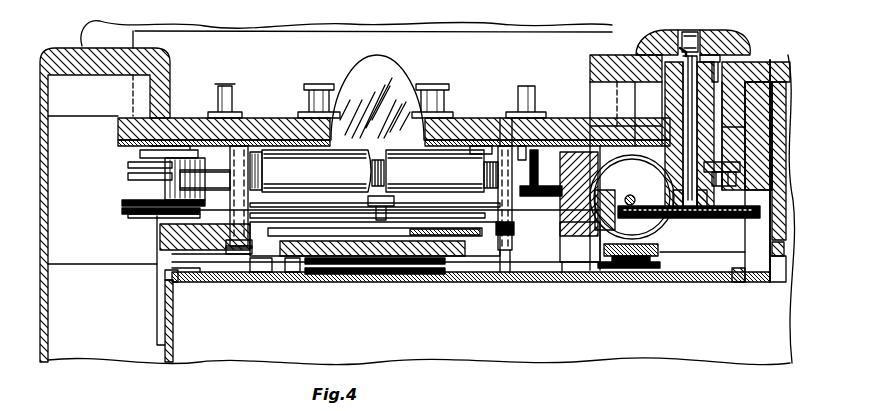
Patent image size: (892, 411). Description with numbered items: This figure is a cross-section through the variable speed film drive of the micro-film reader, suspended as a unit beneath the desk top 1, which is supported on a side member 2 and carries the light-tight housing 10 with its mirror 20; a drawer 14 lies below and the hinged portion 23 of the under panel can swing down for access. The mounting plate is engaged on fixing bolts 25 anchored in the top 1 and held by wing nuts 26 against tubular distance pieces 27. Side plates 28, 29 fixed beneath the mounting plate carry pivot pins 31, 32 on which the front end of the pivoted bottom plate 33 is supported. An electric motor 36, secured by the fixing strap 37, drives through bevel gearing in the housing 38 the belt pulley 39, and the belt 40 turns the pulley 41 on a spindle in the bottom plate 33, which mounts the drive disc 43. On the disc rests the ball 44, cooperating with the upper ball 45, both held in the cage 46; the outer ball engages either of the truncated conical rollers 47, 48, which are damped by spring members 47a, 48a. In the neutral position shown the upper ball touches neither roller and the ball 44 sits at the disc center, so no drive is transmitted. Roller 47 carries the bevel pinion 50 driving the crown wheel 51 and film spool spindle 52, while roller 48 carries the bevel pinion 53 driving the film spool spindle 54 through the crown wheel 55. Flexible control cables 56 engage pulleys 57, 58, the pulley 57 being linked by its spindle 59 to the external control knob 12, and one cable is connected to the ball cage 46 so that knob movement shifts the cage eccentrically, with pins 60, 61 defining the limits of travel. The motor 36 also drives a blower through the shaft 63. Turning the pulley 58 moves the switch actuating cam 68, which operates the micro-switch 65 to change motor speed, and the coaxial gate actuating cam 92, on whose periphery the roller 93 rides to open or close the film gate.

The top 1 is at (96, 56).
The side member 2 is at (176, 339).
The housing 10 is at (150, 26).
The control knob 12 is at (712, 28).
The drawer 14 is at (778, 284).
The mirror 20 is at (400, 80).
The hinged portion 23 is at (680, 276).
The fixing bolt 25 is at (714, 174).
The wing nut 26 is at (732, 172).
The tubular distance piece 27 is at (722, 120).
The side plate 28 is at (245, 252).
The side plate 29 is at (504, 268).
The pivot pin 31 is at (211, 258).
The pivot pin 32 is at (520, 268).
The bottom plate 33 is at (482, 262).
The electric motor 36 is at (626, 190).
The fixing strap 37 is at (586, 180).
The housing 38 is at (660, 240).
The belt pulley 39 is at (664, 272).
The belt 40 is at (566, 270).
The pulley 41 is at (293, 272).
The drive disc 43 is at (258, 264).
The ball 44 is at (356, 222).
The upper ball 45 is at (410, 196).
The cage 46 is at (358, 202).
The truncated conical roller 47 is at (466, 175).
The spring member 47a is at (480, 122).
The truncated conical roller 48 is at (269, 171).
The spring member 48a is at (289, 122).
The bevel pinion 50 is at (502, 126).
The crown wheel 51 is at (538, 190).
The film spool spindle 52 is at (533, 88).
The bevel pinion 53 is at (246, 196).
The film spool spindle 54 is at (230, 86).
The crown wheel 55 is at (222, 172).
The flexible control cable 56 is at (232, 246).
The pulley 57 is at (710, 208).
The pulley 58 is at (136, 214).
The spindle 59 is at (688, 99).
The pin 60 is at (686, 34).
The pin 61 is at (712, 60).
The shaft 63 is at (634, 197).
The micro-switch 65 is at (138, 152).
The switch actuating cam 68 is at (128, 176).
The gate actuating cam 92 is at (128, 165).
The roller 93 is at (142, 180).